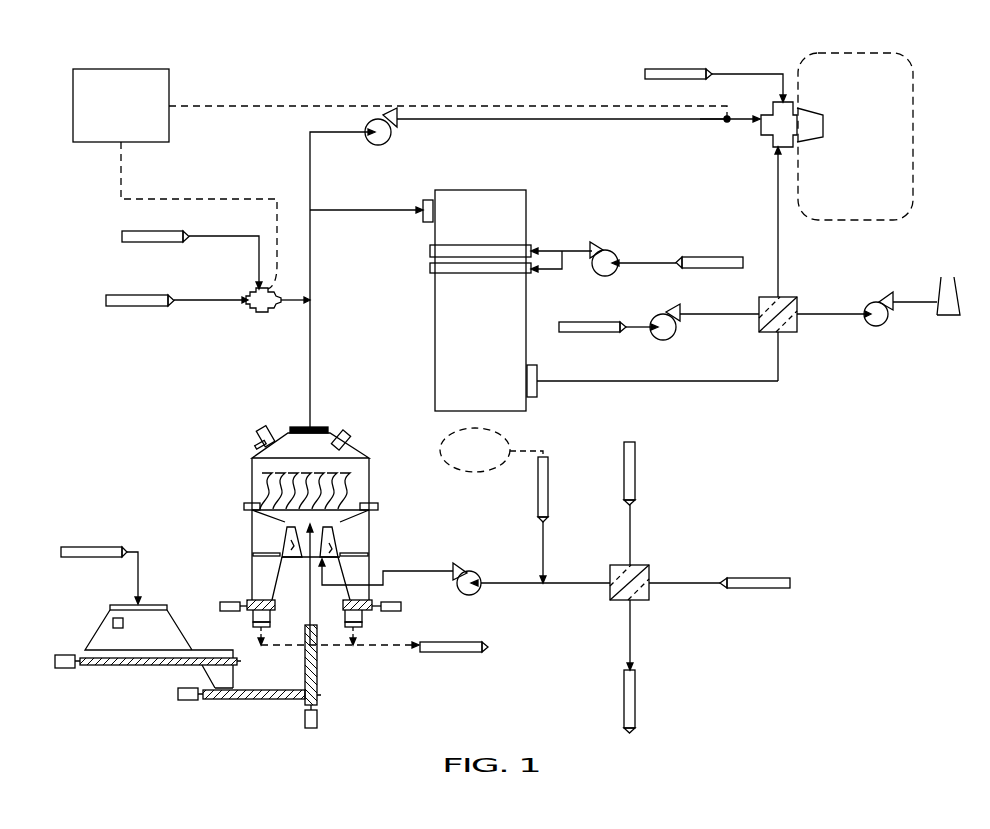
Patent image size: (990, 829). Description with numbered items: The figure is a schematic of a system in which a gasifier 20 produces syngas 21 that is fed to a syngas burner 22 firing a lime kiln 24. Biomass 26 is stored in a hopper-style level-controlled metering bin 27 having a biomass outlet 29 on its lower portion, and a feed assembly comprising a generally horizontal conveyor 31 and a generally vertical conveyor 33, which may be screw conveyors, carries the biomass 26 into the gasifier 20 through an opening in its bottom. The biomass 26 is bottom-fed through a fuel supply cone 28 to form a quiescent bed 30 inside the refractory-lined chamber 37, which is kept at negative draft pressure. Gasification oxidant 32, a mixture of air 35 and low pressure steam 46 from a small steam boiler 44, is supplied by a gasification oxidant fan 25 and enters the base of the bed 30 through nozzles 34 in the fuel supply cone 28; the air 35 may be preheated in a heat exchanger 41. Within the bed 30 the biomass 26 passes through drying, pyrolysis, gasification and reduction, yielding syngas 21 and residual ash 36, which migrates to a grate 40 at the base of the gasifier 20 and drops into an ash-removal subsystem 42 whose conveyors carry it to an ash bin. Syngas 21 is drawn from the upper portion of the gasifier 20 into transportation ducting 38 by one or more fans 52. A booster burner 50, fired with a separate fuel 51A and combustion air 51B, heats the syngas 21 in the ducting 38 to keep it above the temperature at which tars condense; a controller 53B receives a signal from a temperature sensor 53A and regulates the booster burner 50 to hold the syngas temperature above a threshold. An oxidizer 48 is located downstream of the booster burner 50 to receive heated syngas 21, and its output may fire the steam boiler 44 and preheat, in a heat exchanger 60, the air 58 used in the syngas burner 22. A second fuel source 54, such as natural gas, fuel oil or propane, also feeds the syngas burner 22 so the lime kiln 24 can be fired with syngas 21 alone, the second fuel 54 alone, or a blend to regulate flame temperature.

The gasifier 20 is at (352, 447).
The syngas 21 is at (345, 487).
The syngas burner 22 is at (772, 146).
The lime kiln 24 is at (914, 110).
The gasification oxidant fan 25 is at (463, 595).
The biomass 26 is at (93, 557).
The metering bin 27 is at (100, 652).
The fuel supply cone 28 is at (350, 538).
The biomass outlet 29 is at (213, 673).
The bed 30 is at (256, 522).
The horizontal conveyor 31 is at (262, 700).
The gasification oxidant 32 is at (505, 585).
The vertical conveyor 33 is at (318, 660).
The nozzles 34 is at (256, 533).
The air 35 is at (637, 468).
The residual ash 36 is at (460, 654).
The refractory-lined chamber 37 is at (374, 496).
The transportation ducting 38 is at (311, 377).
The grate 40 is at (256, 549).
The heat exchanger 41 is at (655, 570).
The ash-removal subsystem 42 is at (256, 582).
The steam boiler 44 is at (467, 474).
The low pressure steam 46 is at (549, 475).
The oxidizer 48 is at (456, 344).
The booster burner 50 is at (258, 314).
The separate fuel 51A is at (142, 306).
The combustion air 51B is at (130, 231).
The fan 52 is at (392, 140).
The temperature sensor 53A is at (725, 121).
The controller 53B is at (115, 69).
The second fuel source 54 is at (684, 69).
The air 58 is at (592, 323).
The heat exchanger 60 is at (800, 331).